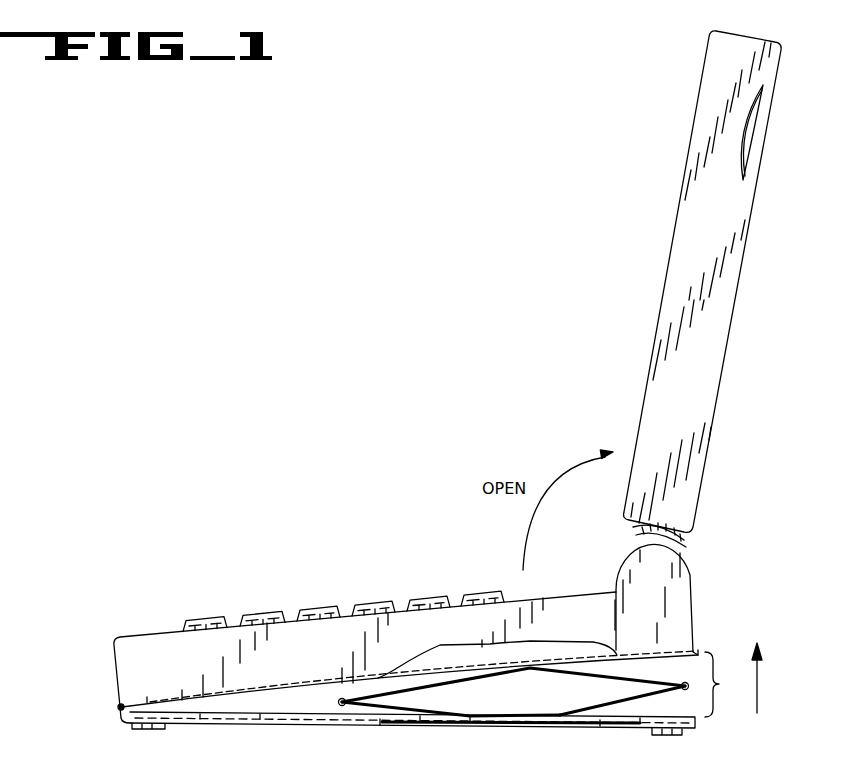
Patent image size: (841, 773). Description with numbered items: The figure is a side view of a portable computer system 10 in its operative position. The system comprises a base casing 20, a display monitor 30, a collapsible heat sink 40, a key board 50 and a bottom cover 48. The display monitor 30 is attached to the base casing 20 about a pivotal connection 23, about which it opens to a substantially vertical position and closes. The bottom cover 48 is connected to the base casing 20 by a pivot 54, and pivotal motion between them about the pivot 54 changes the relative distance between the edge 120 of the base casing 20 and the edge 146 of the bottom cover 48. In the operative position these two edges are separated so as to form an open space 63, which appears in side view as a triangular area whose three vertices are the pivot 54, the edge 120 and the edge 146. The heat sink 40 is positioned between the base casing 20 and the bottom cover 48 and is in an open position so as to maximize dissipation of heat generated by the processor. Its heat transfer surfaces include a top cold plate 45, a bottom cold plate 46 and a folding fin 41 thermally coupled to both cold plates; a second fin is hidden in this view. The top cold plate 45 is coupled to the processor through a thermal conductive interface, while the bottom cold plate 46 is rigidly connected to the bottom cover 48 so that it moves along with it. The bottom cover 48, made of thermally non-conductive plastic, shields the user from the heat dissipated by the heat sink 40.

The portable computer system 10 is at (307, 463).
The base casing 20 is at (693, 590).
The pivotal connection 23 is at (678, 545).
The display monitor 30 is at (727, 343).
The collapsible heat sink 40 is at (510, 720).
The folding fin 41 is at (617, 696).
The top cold plate 45 is at (482, 668).
The bottom cold plate 46 is at (443, 725).
The bottom cover 48 is at (334, 726).
The key board 50 is at (207, 615).
The pivot 54 is at (120, 707).
The open space 63 is at (733, 680).
The edge of the base casing 120 is at (697, 655).
The edge of the bottom cover 146 is at (698, 715).